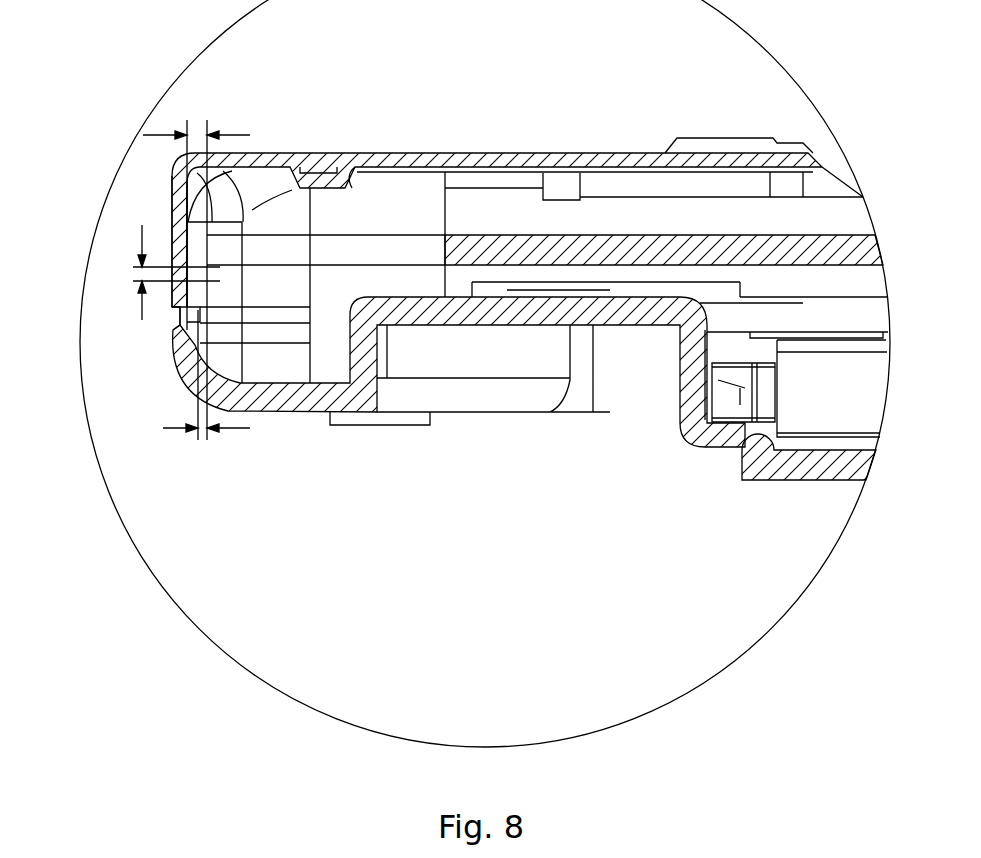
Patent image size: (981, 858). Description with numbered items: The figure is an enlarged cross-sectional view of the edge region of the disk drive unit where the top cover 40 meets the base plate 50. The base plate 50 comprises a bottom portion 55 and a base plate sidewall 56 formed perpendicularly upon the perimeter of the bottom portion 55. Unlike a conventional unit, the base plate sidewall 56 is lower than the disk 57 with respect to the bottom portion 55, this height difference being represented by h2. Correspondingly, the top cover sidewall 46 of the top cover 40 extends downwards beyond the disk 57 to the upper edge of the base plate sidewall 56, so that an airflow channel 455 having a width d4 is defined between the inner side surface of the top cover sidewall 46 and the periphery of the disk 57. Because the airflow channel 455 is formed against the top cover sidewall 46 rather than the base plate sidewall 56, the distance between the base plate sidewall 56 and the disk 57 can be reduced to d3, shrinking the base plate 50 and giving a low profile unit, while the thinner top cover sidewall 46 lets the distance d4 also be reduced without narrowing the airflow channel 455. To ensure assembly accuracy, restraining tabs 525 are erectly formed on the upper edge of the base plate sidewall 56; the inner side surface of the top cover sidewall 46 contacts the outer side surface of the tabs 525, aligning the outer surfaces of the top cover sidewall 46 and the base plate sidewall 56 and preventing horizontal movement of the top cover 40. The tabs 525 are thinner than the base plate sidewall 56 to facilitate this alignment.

The top cover 40 is at (412, 153).
The top cover sidewall 46 is at (183, 235).
The airflow channel 455 is at (185, 235).
The disk 57 is at (356, 245).
The height difference h2 is at (133, 272).
The bottom portion 55 is at (296, 398).
The base plate sidewall 56 is at (183, 360).
The tabs 525 is at (173, 330).
The width of the airflow channel d4 is at (215, 130).
The distance between base plate sidewall and disk d3 is at (207, 435).
The base plate 50 is at (705, 436).